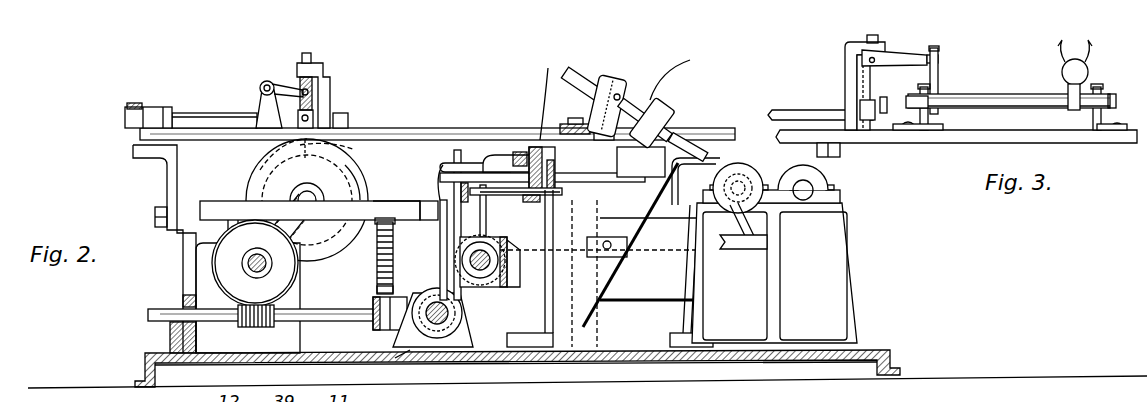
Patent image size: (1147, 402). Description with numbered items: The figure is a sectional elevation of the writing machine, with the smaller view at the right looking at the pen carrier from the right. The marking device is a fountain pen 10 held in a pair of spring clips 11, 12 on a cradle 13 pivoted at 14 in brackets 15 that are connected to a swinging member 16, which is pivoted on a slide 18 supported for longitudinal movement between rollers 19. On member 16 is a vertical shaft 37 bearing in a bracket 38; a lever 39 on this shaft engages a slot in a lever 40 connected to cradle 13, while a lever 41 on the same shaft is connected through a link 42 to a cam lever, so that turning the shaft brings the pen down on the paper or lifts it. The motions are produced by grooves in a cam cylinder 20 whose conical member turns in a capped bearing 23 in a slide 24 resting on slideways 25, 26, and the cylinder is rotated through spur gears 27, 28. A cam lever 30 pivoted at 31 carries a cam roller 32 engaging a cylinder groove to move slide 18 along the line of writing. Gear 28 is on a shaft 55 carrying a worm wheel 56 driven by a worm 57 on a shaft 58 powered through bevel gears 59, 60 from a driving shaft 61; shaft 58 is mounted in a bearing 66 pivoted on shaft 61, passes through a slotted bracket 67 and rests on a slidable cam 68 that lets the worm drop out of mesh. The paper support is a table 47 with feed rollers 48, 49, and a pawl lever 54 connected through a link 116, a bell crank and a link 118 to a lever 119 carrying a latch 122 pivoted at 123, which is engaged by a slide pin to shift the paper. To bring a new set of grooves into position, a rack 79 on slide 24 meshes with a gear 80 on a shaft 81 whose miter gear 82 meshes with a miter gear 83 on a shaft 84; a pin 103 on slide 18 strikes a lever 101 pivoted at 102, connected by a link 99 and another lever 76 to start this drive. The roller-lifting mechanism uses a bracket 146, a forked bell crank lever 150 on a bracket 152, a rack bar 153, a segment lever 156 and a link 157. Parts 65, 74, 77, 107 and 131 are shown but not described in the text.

In FIG. 2, the fountain pen 10 is at (688, 140).
In FIG. 3, the fountain pen 10 is at (1083, 68).
In FIG. 2, the spring clip 11 is at (665, 115).
In FIG. 3, the spring clip 11 is at (1058, 48).
In FIG. 2, the spring clip 12 is at (618, 82).
In FIG. 2, the cradle 13 is at (673, 74).
In FIG. 3, the cradle 13 is at (998, 94).
In FIG. 3, the pivot 14 is at (920, 100).
In FIG. 3, the brackets 15 is at (924, 127).
In FIG. 2, the swinging member 16 is at (590, 78).
In FIG. 3, the swinging member 16 is at (972, 143).
In FIG. 2, the slide 18 is at (645, 105).
In FIG. 2, the rollers 19 is at (540, 92).
In FIG. 2, the cam cylinder 20 is at (250, 185).
In FIG. 2, the capped bearing 23 is at (265, 158).
In FIG. 2, the slide 24 is at (370, 185).
In FIG. 2, the slideway 25 is at (412, 201).
In FIG. 2, the slideway 26 is at (186, 206).
In FIG. 2, the spur gear 27 is at (307, 183).
In FIG. 2, the spur gear 28 is at (200, 270).
In FIG. 2, the cam lever 30 is at (410, 128).
In FIG. 2, the pivot 31 is at (172, 111).
In FIG. 2, the cam roller 32 is at (333, 142).
In FIG. 3, the vertical shaft 37 is at (857, 80).
In FIG. 3, the bracket 38 is at (845, 60).
In FIG. 3, the lever 39 is at (916, 46).
In FIG. 3, the lever 40 is at (940, 72).
In FIG. 2, the lever 41 is at (600, 118).
In FIG. 3, the lever 41 is at (860, 105).
In FIG. 2, the link 42 is at (571, 115).
In FIG. 3, the link 42 is at (778, 110).
In FIG. 2, the table 47 is at (616, 270).
In FIG. 2, the feed roller 48 is at (742, 163).
In FIG. 2, the feed roller 49 is at (788, 168).
In FIG. 2, the pawl lever 54 is at (780, 222).
In FIG. 2, the shaft 55 is at (255, 263).
In FIG. 2, the worm wheel 56 is at (300, 268).
In FIG. 2, the worm 57 is at (290, 326).
In FIG. 2, the shaft 58 is at (385, 296).
In FIG. 2, the bevel gear 59 is at (397, 366).
In FIG. 2, the bevel gear 60 is at (435, 357).
In FIG. 2, the driving shaft 61 is at (462, 313).
In FIG. 2, the bar 65 is at (310, 211).
In FIG. 2, the bearing 66 is at (380, 322).
In FIG. 2, the slotted bracket 67 is at (181, 296).
In FIG. 2, the cam 68 is at (170, 326).
In FIG. 2, the block 74 is at (520, 152).
In FIG. 2, the lever 76 is at (490, 155).
In FIG. 2, the arm 77 is at (450, 163).
In FIG. 2, the rack 79 is at (377, 240).
In FIG. 2, the gear 80 is at (378, 260).
In FIG. 2, the shaft 81 is at (454, 240).
In FIG. 2, the miter gear 82 is at (521, 263).
In FIG. 2, the miter gear 83 is at (447, 228).
In FIG. 2, the shaft 84 is at (478, 285).
In FIG. 2, the link 99 is at (540, 195).
In FIG. 2, the lever 101 is at (622, 182).
In FIG. 2, the pivot 102 is at (428, 199).
In FIG. 2, the pin 103 is at (620, 182).
In FIG. 2, the bar 107 is at (475, 158).
In FIG. 2, the link 116 is at (742, 250).
In FIG. 2, the link 118 is at (545, 196).
In FIG. 2, the lever 119 is at (527, 198).
In FIG. 2, the latch 122 is at (560, 180).
In FIG. 2, the pivot 123 is at (541, 96).
In FIG. 2, the pin 131 is at (460, 186).
In FIG. 2, the bracket 146 is at (332, 82).
In FIG. 2, the bell crank lever 150 is at (290, 86).
In FIG. 2, the bracket 152 is at (260, 86).
In FIG. 2, the rack bar 153 is at (258, 96).
In FIG. 2, the lever 156 is at (135, 107).
In FIG. 2, the link 157 is at (130, 103).